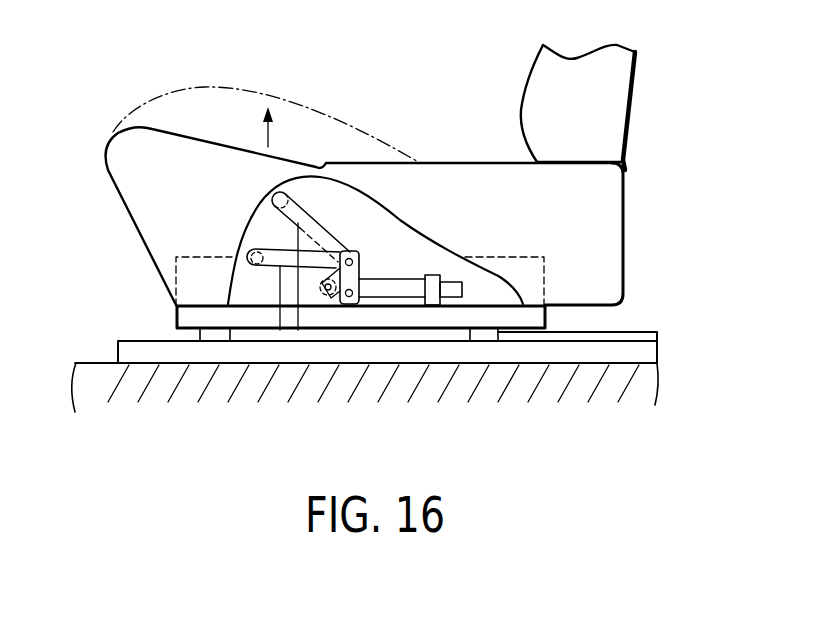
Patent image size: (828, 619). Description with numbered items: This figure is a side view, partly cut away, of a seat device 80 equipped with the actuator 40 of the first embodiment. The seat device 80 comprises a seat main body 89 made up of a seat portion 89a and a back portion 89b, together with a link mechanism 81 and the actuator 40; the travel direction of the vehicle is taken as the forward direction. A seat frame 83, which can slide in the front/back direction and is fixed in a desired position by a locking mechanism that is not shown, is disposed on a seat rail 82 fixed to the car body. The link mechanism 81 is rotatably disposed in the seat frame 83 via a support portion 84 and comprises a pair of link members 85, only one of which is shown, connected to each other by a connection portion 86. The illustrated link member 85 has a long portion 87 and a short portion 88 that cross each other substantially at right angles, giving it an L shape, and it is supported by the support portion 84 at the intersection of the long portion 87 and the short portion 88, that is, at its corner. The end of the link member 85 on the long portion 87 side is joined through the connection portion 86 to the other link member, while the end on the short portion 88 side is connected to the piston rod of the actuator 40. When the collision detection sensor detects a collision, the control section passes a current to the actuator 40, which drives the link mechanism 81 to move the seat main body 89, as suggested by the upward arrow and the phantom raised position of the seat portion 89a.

The seat device 80 is at (413, 98).
The link mechanism 81 is at (375, 265).
The seat rail 82 is at (413, 345).
The seat frame 83 is at (533, 257).
The support portion 84 is at (349, 252).
The link member 85 is at (280, 330).
The connection portion 86 is at (251, 266).
The long portion 87 is at (270, 242).
The short portion 88 is at (382, 280).
The seat main body 89 is at (622, 115).
The seat portion 89a is at (488, 175).
The back portion 89b is at (537, 85).
The actuator 40 is at (452, 320).